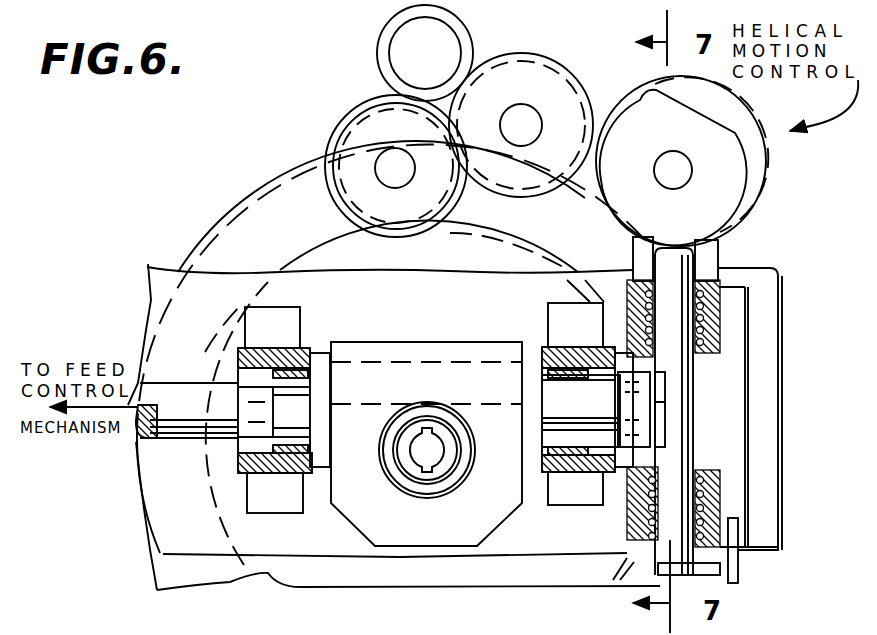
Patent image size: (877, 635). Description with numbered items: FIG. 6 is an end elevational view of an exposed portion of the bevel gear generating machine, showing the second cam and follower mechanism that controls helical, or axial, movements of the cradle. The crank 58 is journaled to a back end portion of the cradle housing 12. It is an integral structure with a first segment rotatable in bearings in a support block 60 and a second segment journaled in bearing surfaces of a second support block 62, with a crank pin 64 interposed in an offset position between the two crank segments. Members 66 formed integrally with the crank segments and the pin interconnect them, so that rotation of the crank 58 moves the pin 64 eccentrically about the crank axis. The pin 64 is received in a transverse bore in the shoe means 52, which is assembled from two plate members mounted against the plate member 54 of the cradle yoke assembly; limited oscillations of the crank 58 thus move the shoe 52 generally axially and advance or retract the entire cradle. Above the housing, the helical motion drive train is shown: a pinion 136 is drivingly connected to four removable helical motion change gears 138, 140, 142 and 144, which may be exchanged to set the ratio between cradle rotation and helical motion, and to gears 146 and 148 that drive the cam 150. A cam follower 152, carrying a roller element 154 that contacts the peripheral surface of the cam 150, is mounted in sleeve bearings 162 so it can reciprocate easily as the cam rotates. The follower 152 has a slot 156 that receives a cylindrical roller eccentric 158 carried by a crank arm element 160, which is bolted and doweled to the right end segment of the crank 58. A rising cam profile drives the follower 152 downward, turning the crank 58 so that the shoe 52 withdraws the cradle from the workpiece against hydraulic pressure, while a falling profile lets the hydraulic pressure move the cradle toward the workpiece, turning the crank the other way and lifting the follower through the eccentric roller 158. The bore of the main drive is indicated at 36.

The cradle housing 12 is at (160, 487).
The drive shaft 36 is at (434, 446).
The shoe means 52 is at (383, 551).
The plate member 54 is at (442, 486).
The crank 58 is at (183, 394).
The support block 60 is at (282, 484).
The second support block 62 is at (596, 472).
The crank pin 64 is at (420, 357).
The members 66 is at (322, 467).
The pinion 136 is at (338, 160).
The helical motion change gear 138 is at (342, 130).
The helical motion change gear 140 is at (390, 68).
The helical motion change gear 142 is at (378, 50).
The helical motion change gear 144 is at (510, 58).
The gear 146 is at (556, 63).
The gear 148 is at (737, 113).
The cam 150 is at (666, 139).
The cam follower 152 is at (698, 268).
The roller element 154 is at (678, 245).
The slot 156 is at (663, 438).
The cylindrical roller eccentric 158 is at (663, 386).
The crank arm element 160 is at (620, 440).
The sleeve bearings 162 is at (720, 317).